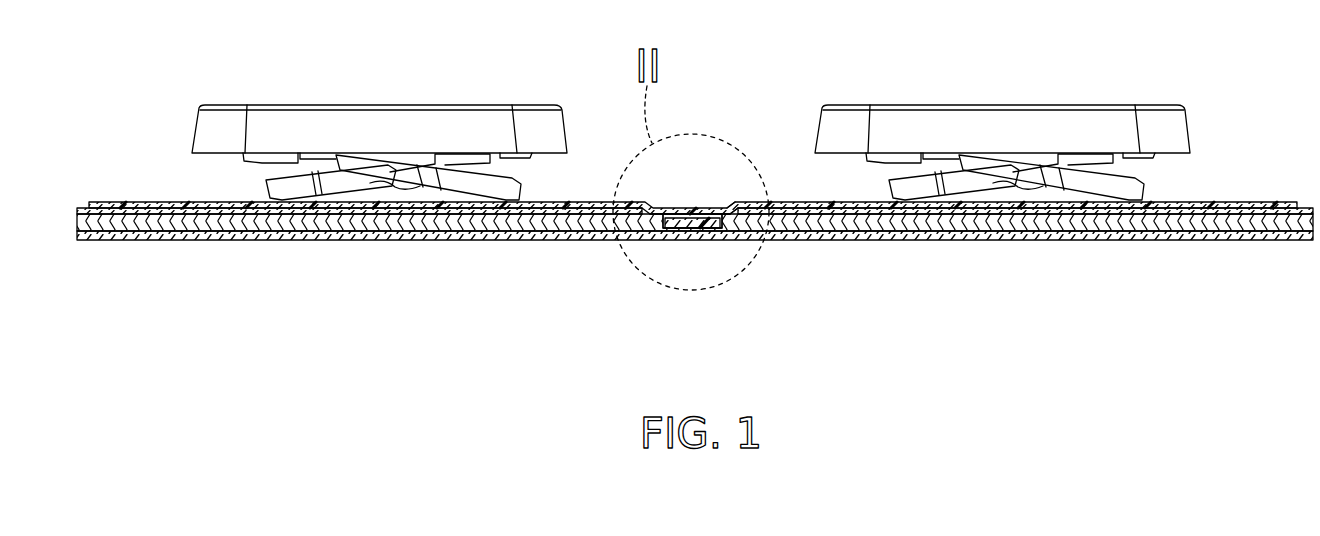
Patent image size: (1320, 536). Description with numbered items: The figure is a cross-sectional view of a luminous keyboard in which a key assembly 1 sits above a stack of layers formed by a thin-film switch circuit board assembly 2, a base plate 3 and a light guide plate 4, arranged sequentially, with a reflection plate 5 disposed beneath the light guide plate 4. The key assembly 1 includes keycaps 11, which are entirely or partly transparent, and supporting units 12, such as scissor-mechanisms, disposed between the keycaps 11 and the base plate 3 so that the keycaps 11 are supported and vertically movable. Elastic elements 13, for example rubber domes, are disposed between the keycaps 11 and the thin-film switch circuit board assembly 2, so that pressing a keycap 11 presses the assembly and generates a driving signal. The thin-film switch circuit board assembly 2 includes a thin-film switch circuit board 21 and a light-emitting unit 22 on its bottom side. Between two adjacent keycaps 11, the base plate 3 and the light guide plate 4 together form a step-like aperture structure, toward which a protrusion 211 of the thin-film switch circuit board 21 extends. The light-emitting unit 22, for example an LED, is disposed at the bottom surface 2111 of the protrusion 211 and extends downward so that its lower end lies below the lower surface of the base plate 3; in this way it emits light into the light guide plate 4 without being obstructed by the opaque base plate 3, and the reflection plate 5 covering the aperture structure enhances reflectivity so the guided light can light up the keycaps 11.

The key assembly 1 is at (691, 162).
The keycap 11 is at (992, 128).
The supporting unit 12 is at (1028, 160).
The elastic element 13 is at (1002, 198).
The thin-film switch circuit board assembly 2 is at (714, 204).
The thin-film switch circuit board 21 is at (791, 207).
The protrusion 211 is at (788, 343).
The bottom surface 2111 is at (728, 237).
The light-emitting unit 22 is at (704, 230).
The base plate 3 is at (594, 206).
The light guide plate 4 is at (821, 240).
The reflection plate 5 is at (579, 243).